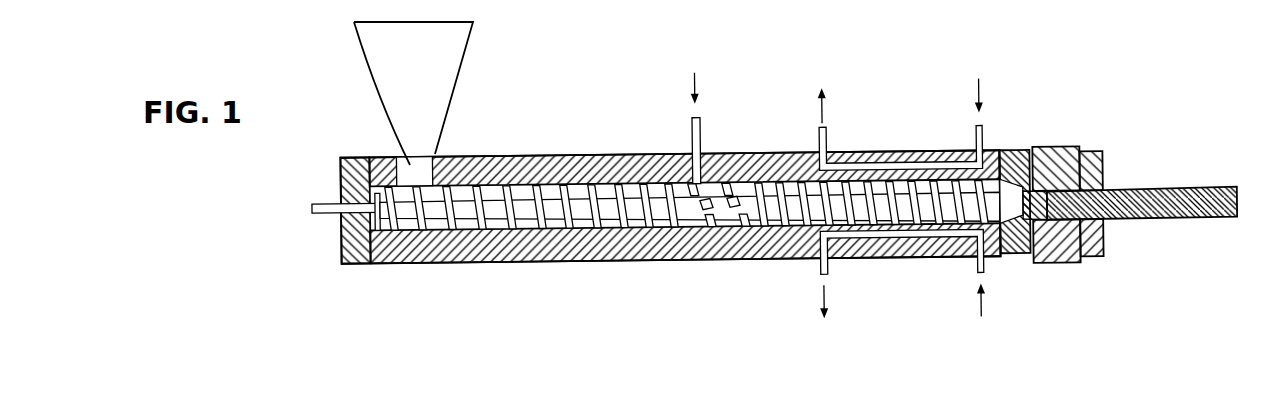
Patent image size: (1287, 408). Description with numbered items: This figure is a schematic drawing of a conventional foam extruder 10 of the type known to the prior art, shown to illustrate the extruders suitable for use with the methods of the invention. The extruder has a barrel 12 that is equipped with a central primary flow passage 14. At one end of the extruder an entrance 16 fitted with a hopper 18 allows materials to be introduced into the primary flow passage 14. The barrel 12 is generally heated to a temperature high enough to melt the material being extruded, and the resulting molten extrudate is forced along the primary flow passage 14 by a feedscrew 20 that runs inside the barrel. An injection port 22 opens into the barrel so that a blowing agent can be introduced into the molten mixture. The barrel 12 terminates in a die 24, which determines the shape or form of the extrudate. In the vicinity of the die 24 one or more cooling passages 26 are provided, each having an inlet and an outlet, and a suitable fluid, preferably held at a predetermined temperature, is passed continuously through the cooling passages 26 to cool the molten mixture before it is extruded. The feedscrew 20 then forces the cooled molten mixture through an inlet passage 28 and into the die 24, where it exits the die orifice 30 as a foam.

The foam extruder 10 is at (559, 86).
The barrel 12 is at (590, 153).
The primary flow passage 14 is at (440, 223).
The entrance 16 is at (410, 163).
The hopper 18 is at (377, 40).
The feedscrew 20 is at (582, 200).
The injection port 22 is at (692, 131).
The die 24 is at (1057, 147).
The cooling passages 26 is at (887, 152).
The inlet passage 28 is at (1013, 257).
The die orifice 30 is at (1107, 192).